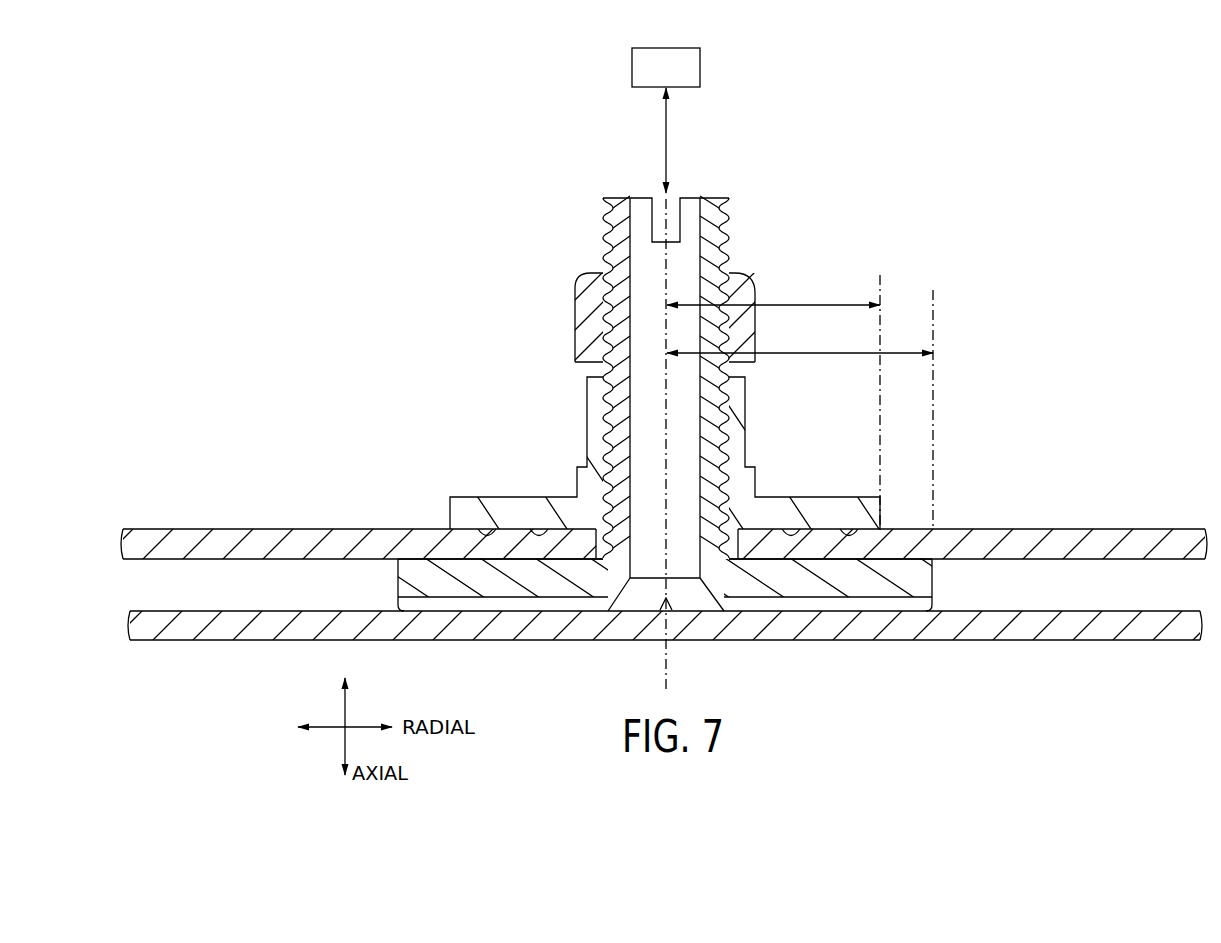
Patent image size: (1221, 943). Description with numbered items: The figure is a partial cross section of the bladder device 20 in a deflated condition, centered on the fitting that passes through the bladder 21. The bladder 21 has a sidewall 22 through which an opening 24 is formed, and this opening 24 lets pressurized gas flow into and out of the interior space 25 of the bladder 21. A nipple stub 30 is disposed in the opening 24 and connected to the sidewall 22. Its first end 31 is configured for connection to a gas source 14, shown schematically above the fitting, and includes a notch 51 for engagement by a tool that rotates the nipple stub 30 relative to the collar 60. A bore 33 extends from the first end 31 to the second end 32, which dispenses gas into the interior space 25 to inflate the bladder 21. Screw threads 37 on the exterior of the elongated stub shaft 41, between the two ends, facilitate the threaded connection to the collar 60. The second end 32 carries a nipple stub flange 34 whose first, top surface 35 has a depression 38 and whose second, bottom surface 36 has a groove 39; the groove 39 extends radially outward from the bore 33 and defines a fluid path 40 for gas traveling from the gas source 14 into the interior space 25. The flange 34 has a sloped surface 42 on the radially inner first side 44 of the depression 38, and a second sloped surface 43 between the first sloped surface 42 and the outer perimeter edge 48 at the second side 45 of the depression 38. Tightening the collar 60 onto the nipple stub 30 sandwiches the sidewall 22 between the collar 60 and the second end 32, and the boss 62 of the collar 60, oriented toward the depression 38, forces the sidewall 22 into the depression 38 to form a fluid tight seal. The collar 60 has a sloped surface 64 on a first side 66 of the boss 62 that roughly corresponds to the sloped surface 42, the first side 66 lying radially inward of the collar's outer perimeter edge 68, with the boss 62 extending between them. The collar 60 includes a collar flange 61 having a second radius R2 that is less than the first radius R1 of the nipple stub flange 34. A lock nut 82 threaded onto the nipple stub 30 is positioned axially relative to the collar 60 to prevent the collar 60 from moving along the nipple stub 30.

The gas source 14 is at (665, 47).
The bladder device 20 is at (450, 276).
The bladder 21 is at (1070, 508).
The sidewall 22 is at (270, 536).
The opening 24 is at (722, 526).
The interior space 25 is at (320, 600).
The nipple stub 30 is at (618, 375).
The first end 31 is at (601, 228).
The second end 32 is at (833, 575).
The bore 33 is at (676, 272).
The nipple stub flange 34 is at (735, 573).
The first surface 35 is at (395, 531).
The second surface 36 is at (555, 595).
The screw threads 37 is at (625, 408).
The depression 38 is at (470, 547).
The groove 39 is at (400, 612).
The fluid path 40 is at (440, 605).
The stub shaft 41 is at (732, 245).
The sloped surface 42 is at (500, 497).
The second sloped surface 43 is at (472, 575).
The first side 44 is at (585, 561).
The second side 45 is at (398, 592).
The outer perimeter edge 48 is at (445, 570).
The notch 51 is at (658, 236).
The collar 60 is at (748, 470).
The collar flange 61 is at (868, 497).
The boss 62 is at (487, 533).
The sloped surface 64 is at (548, 531).
The first side 66 is at (513, 523).
The outer perimeter edge 68 is at (453, 500).
The lock nut 82 is at (590, 322).
The first radius R1 is at (800, 339).
The second radius R2 is at (773, 290).